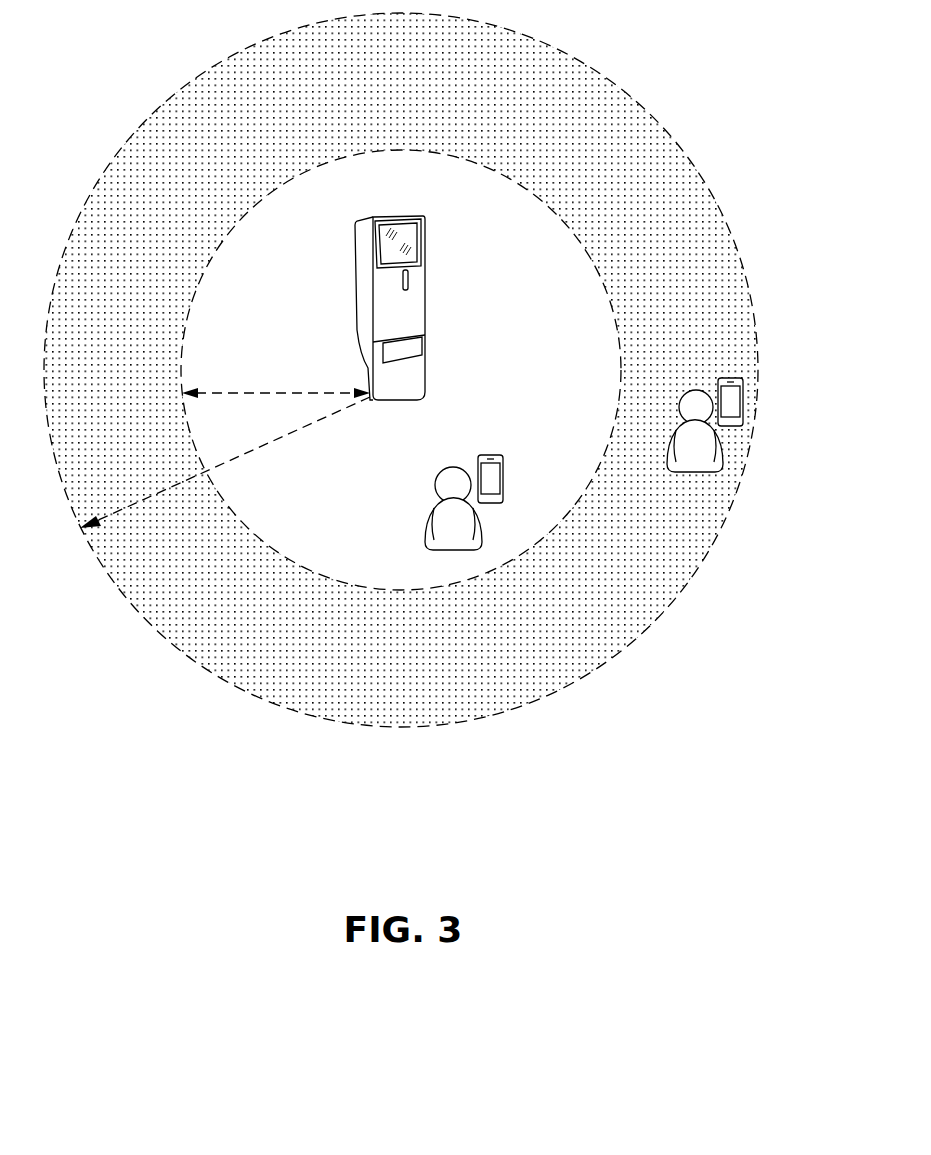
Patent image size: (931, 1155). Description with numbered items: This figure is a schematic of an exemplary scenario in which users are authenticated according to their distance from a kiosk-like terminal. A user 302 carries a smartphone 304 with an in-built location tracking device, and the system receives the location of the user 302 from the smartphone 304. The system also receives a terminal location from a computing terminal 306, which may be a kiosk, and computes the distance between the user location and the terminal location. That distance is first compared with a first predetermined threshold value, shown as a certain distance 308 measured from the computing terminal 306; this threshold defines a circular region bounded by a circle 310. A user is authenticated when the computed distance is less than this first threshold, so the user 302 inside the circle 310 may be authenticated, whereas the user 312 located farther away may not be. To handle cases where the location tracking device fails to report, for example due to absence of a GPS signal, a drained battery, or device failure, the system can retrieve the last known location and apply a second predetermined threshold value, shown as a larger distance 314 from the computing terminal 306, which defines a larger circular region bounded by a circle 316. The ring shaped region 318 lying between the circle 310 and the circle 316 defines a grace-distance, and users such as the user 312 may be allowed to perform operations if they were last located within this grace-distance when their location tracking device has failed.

The user 302 is at (423, 517).
The smartphone 304 is at (500, 468).
The computing terminal 306 is at (428, 220).
The distance 308 is at (247, 392).
The circle 310 is at (585, 240).
The user 312 is at (705, 457).
The distance 314 is at (260, 447).
The circle 316 is at (218, 682).
The ring shaped region 318 is at (180, 598).